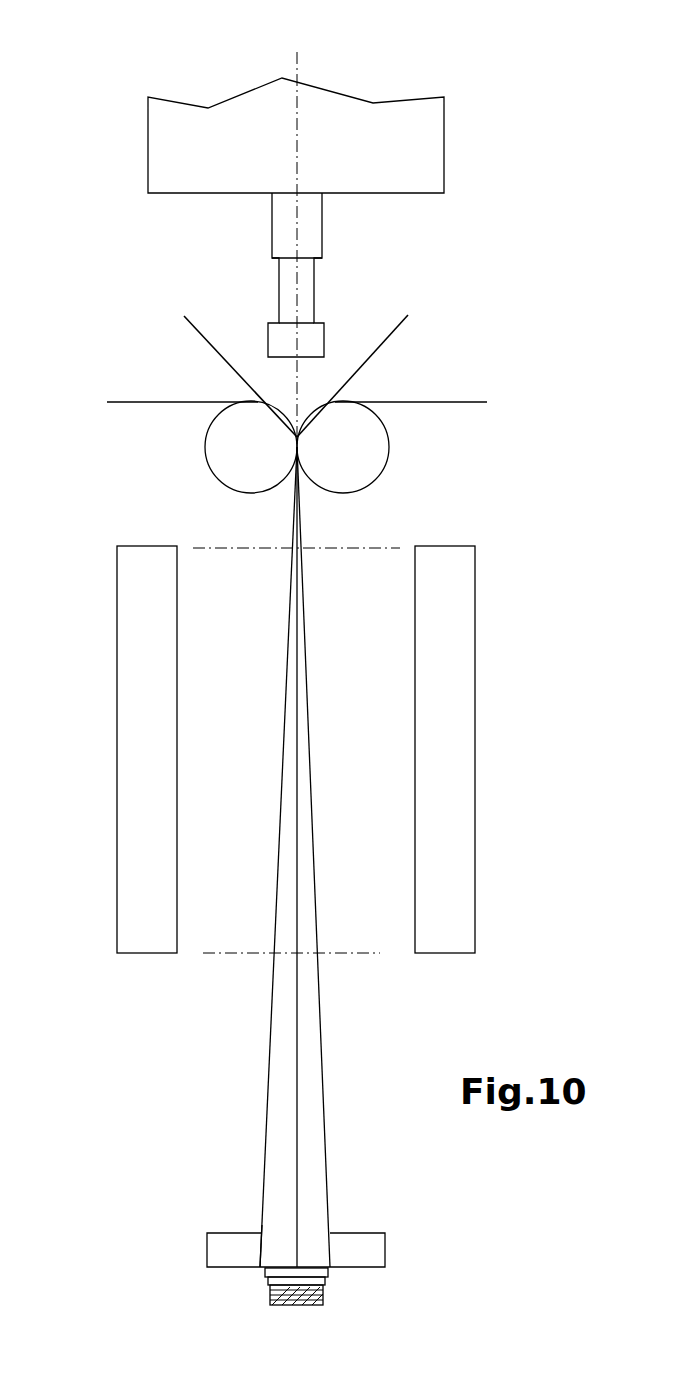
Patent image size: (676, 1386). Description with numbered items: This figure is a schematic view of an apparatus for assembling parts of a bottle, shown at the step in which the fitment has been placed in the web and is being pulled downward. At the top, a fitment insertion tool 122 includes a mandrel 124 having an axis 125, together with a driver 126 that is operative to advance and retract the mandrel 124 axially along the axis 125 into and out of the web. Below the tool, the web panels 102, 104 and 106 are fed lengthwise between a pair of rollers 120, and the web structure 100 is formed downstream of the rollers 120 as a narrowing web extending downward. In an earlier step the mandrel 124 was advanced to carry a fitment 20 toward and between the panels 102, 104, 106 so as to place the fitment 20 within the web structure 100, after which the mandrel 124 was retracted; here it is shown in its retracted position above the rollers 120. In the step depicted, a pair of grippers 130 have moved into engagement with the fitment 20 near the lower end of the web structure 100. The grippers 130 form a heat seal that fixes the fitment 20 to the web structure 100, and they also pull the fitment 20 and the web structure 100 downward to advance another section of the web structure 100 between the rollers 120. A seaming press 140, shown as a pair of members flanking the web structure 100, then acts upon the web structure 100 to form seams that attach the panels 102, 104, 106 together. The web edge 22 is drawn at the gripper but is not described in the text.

The fitment insertion tool 122 is at (119, 119).
The axis 125 is at (297, 140).
The driver 126 is at (148, 160).
The mandrel 124 is at (279, 294).
The web panel 106 is at (198, 337).
The web panel 102 is at (157, 402).
The web panel 104 is at (450, 400).
The rollers 120 is at (205, 448).
The web structure 100 is at (290, 535).
The seaming press 140 is at (117, 731).
The grippers 130 is at (207, 1250).
The web edge 22 is at (260, 1250).
The fitment 20 is at (327, 1297).